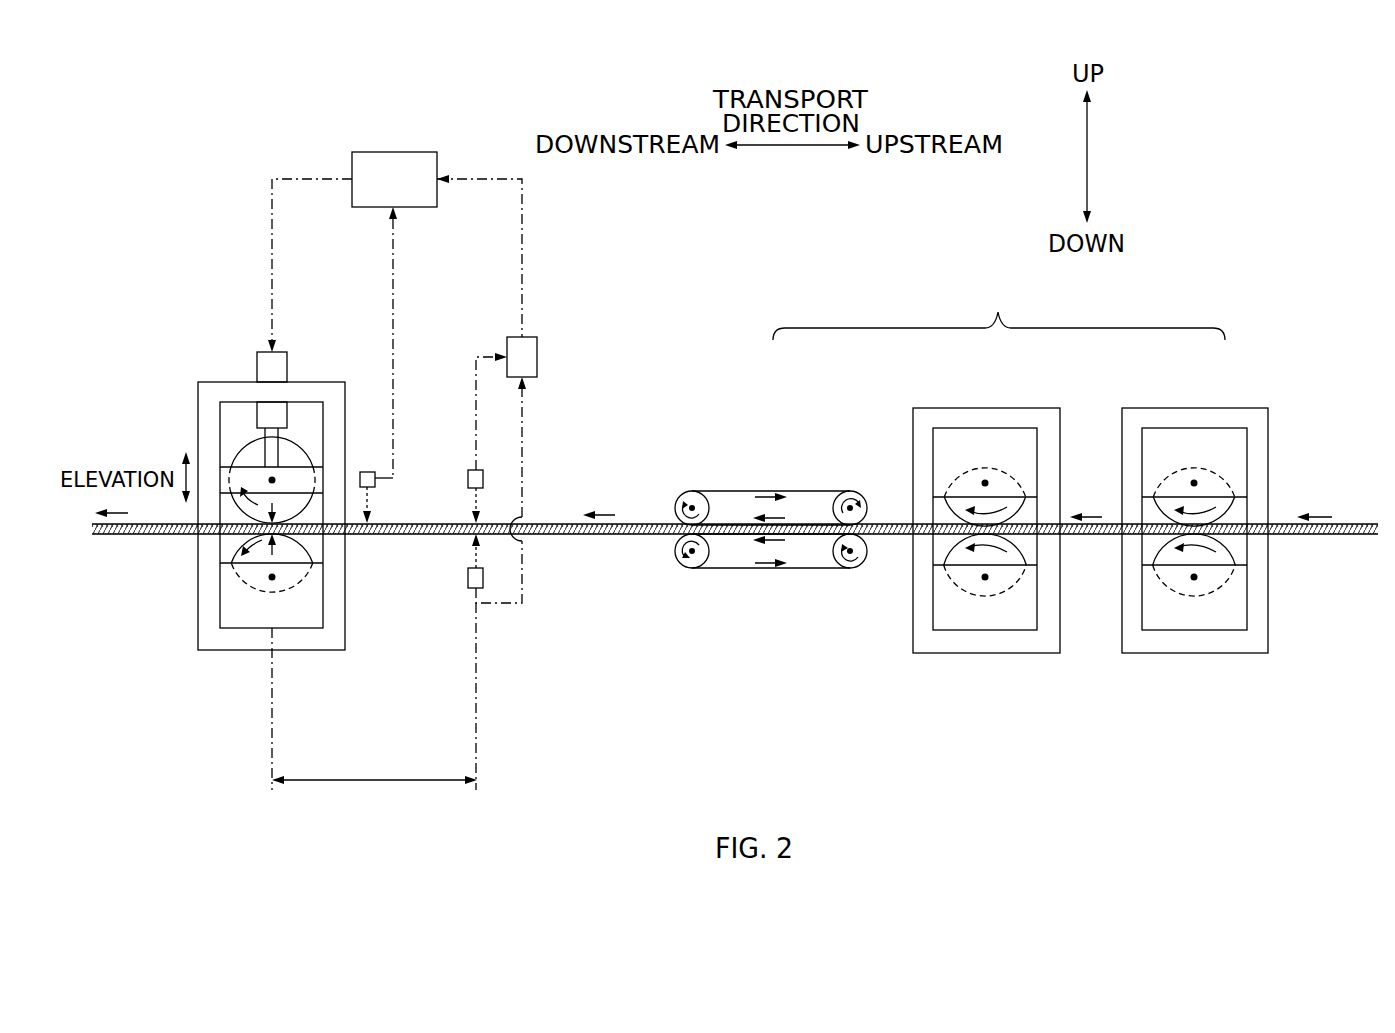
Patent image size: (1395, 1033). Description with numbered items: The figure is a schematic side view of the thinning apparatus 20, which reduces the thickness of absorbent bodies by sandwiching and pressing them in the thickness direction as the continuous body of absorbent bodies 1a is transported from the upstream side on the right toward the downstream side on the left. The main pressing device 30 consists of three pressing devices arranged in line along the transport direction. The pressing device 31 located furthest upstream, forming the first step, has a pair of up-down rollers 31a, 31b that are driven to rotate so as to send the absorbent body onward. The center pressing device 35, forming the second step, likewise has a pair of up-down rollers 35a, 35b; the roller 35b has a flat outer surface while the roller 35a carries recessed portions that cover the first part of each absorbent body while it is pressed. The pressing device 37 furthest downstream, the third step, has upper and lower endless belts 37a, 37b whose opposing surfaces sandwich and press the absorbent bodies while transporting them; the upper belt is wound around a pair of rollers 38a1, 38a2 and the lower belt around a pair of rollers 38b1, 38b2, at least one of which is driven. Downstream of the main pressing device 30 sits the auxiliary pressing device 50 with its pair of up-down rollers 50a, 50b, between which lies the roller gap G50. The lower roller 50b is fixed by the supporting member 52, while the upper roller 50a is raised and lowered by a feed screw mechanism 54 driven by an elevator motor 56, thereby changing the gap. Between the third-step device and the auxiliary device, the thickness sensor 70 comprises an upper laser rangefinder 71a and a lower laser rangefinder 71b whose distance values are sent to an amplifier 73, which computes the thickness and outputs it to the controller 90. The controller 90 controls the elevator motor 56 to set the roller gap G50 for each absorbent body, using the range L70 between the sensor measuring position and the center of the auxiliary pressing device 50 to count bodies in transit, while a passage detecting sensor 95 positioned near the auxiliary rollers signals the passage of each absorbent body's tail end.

The continuous body of absorbent bodies 1a is at (1362, 523).
The thinning apparatus 20 is at (1250, 228).
The main pressing device 30 is at (999, 311).
The pressing device 31 is at (1222, 502).
The upper roller 31a is at (1230, 458).
The lower roller 31b is at (1230, 600).
The center pressing device 35 is at (1014, 502).
The upper roller 35a is at (1022, 458).
The lower roller 35b is at (1022, 600).
The pressing device 37 is at (772, 490).
The upper endless belt 37a is at (795, 491).
The lower endless belt 37b is at (795, 568).
The roller 38a1 is at (850, 491).
The roller 38a2 is at (692, 491).
The roller 38b1 is at (850, 568).
The roller 38b2 is at (692, 568).
The auxiliary pressing device 50 is at (238, 461).
The upper roller 50a is at (247, 442).
The lower roller 50b is at (233, 598).
The supporting member 52 is at (242, 382).
The feed screw mechanism 54 is at (287, 410).
The elevator motor 56 is at (287, 363).
The roller gap G50 is at (294, 535).
The thickness sensor 70 is at (445, 501).
The upper laser rangefinder 71a is at (468, 480).
The lower laser rangefinder 71b is at (468, 583).
The amplifier 73 is at (537, 357).
The controller 90 is at (393, 152).
The passage detecting sensor 95 is at (367, 472).
The range between auxiliary pressing device center and thickness sensor measuring po L70 is at (374, 768).